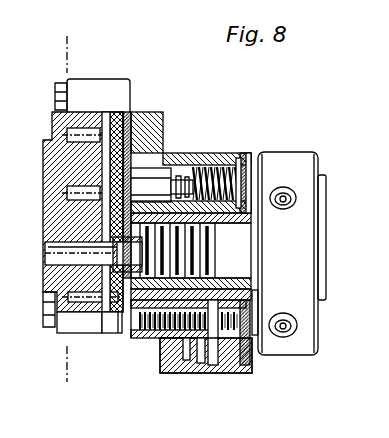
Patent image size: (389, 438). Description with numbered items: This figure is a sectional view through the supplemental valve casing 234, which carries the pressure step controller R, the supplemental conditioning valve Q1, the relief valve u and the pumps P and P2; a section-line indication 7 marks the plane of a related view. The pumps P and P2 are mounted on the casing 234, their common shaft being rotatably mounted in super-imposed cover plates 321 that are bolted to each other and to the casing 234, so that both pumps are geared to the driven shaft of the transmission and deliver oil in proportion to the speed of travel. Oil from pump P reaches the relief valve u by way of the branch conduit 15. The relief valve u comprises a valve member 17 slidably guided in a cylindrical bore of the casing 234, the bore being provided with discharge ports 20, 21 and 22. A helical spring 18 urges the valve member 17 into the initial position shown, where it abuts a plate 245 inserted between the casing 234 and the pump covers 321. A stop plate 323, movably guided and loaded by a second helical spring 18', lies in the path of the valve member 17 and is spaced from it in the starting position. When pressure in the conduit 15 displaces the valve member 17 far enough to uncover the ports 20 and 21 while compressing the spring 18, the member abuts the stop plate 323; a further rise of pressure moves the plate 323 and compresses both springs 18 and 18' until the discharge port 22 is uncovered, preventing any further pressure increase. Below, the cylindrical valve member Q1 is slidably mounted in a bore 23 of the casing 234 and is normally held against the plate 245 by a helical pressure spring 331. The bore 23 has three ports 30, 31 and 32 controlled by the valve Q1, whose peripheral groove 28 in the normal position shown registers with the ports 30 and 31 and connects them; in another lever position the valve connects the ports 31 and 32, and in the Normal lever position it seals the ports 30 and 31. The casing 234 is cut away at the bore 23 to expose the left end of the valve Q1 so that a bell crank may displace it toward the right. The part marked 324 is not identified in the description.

The section line 7- 7 is at (54, 49).
The branch conduit 15 is at (58, 205).
The valve member 17 is at (167, 168).
The helical spring 18 is at (266, 168).
The helical spring 18' is at (254, 164).
The discharge port 20 is at (151, 185).
The discharge port 21 is at (152, 176).
The discharge port 22 is at (162, 158).
The bore 23 is at (246, 374).
The peripheral groove 28 is at (152, 380).
The port 30 is at (186, 362).
The port 31 is at (200, 365).
The port 32 is at (215, 372).
The plate 245 is at (128, 114).
The casing 234 is at (145, 120).
The cover plates 321 is at (77, 110).
The stop plate 323 is at (196, 168).
The clutch plates 324 is at (250, 255).
The helical pressure spring 331 is at (243, 318).
The pressure step controller R is at (300, 319).
The pump P is at (116, 305).
The pump P2 is at (100, 303).
The supplemental conditioning valve Q1 is at (150, 340).
The relief valve u is at (190, 165).